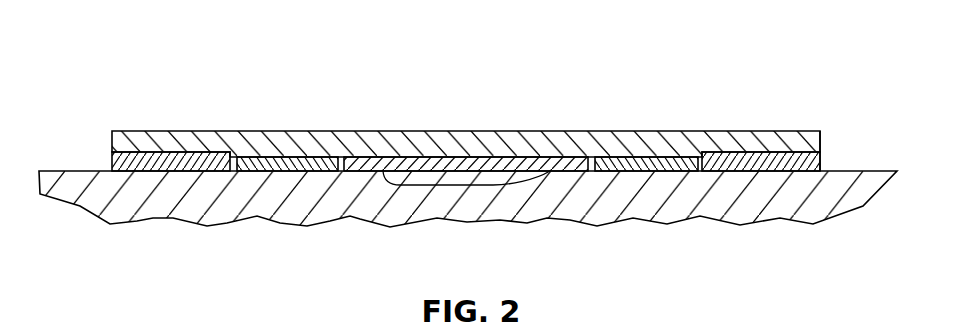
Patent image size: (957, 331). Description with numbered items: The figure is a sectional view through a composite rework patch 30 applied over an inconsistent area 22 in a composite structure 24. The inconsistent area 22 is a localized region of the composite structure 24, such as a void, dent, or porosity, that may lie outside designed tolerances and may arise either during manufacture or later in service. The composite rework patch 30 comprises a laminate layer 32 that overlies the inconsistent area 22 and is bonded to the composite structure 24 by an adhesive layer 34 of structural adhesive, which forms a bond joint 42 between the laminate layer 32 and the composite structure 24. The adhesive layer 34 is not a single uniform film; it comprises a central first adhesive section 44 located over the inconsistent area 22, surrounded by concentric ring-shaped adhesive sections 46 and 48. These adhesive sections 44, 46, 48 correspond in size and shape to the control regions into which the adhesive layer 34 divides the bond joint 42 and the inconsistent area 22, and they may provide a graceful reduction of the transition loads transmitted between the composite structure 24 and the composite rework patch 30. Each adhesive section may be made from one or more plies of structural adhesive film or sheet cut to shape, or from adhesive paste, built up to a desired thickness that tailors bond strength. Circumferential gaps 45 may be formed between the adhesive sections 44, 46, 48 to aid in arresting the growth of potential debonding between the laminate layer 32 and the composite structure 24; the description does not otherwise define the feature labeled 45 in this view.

The inconsistent area 22 is at (493, 187).
The composite structure 24 is at (128, 198).
The composite rework patch 30 is at (714, 71).
The laminate layer 32 is at (155, 143).
The adhesive layer 34 is at (846, 147).
The bond joint 42 is at (93, 152).
The first adhesive section 44 is at (553, 165).
The solder joint 45 is at (339, 141).
The adhesive section 46 is at (648, 160).
The adhesive section 48 is at (767, 156).